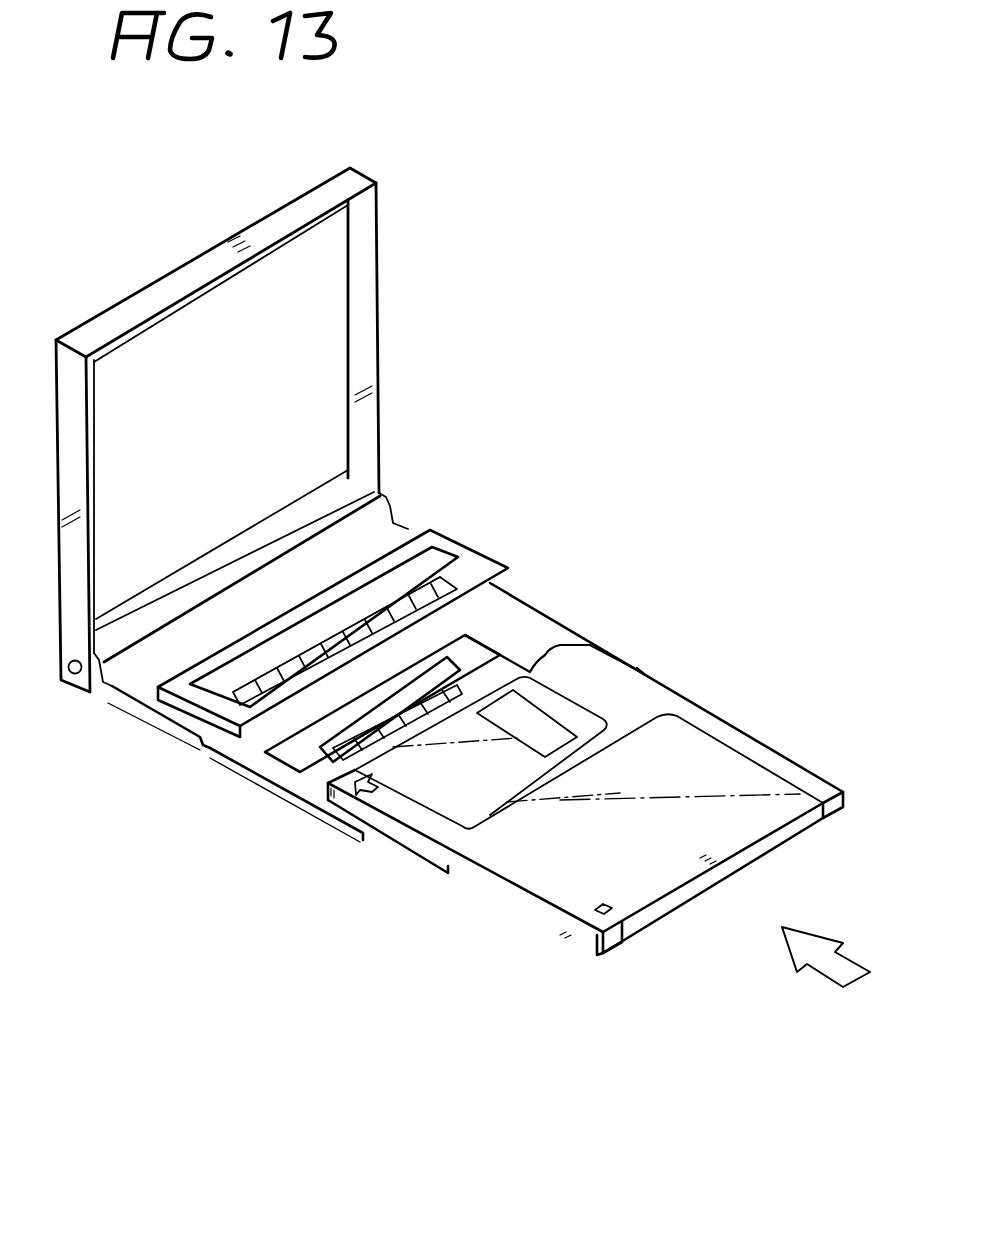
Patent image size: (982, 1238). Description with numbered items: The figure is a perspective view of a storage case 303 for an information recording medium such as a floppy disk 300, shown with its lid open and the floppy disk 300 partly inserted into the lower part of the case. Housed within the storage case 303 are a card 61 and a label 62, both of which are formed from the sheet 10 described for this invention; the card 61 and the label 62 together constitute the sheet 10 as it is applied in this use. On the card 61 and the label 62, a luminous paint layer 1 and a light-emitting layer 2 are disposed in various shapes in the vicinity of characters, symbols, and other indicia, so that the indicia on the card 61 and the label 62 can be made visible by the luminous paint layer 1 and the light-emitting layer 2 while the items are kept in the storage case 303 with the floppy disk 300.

The storage case 303 is at (322, 300).
The sheet 10 is at (618, 408).
The card 61 is at (463, 557).
The label 62 is at (487, 658).
The light-emitting layer 2 is at (430, 553).
The luminous paint layer 1 is at (452, 589).
The floppy disk 300 is at (460, 835).